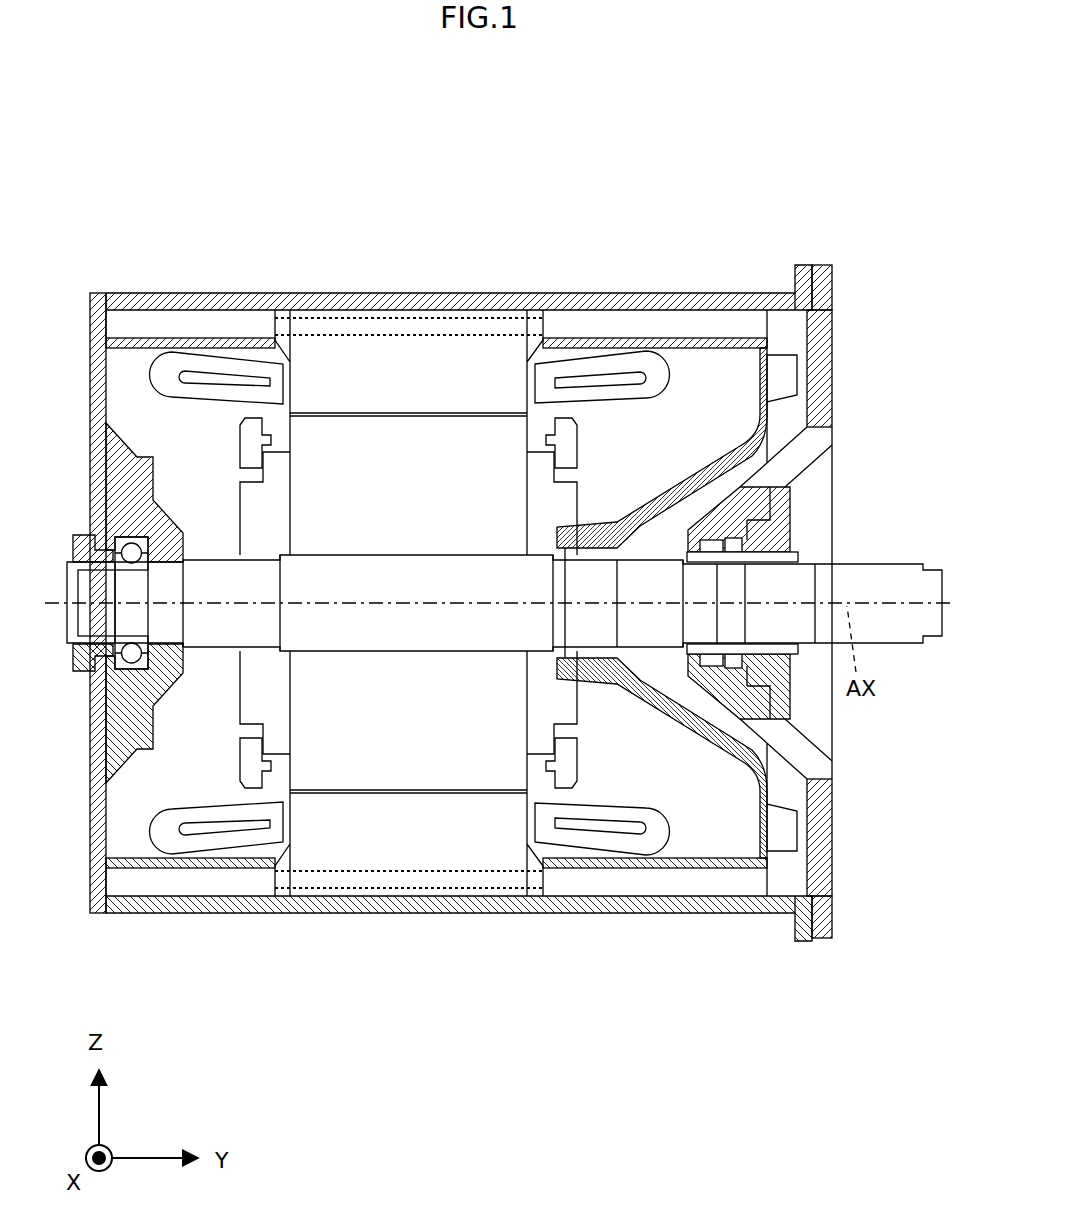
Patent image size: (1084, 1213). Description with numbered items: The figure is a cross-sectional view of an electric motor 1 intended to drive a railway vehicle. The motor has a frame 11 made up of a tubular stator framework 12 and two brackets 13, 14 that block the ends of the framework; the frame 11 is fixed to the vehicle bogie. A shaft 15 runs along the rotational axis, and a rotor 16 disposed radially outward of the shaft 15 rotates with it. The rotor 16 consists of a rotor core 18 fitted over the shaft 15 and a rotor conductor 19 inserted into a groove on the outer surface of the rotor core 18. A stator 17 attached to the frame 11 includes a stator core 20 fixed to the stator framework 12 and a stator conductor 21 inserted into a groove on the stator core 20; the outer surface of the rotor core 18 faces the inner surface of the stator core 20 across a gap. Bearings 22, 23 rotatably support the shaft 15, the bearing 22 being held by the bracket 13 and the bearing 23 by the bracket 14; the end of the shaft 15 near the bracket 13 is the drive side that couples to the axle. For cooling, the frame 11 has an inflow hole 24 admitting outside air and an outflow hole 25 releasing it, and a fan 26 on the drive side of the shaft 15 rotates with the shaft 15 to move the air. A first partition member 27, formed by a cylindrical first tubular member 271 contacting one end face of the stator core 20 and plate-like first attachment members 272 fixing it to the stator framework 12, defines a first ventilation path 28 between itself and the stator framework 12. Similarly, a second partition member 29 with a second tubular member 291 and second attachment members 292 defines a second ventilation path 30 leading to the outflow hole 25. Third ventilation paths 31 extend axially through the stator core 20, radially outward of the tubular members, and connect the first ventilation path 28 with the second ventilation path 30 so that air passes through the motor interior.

The electric motor 1 is at (622, 128).
The frame 11 is at (288, 272).
The stator framework 12 is at (389, 300).
The bracket 13 is at (815, 388).
The bracket 14 is at (108, 476).
The shaft 15 is at (879, 578).
The rotor 16 is at (233, 525).
The stator 17 is at (228, 408).
The rotor core 18 is at (461, 357).
The rotor conductor 19 is at (549, 440).
The stator core 20 is at (472, 468).
The stator conductor 21 is at (613, 366).
The bearing 22 is at (737, 539).
The bearing 23 is at (120, 562).
The inflow hole 24 is at (792, 456).
The outflow hole 25 is at (88, 310).
The fan 26 is at (613, 521).
The first partition member 27 is at (697, 360).
The first tubular member 271 is at (712, 348).
The first attachment member 272 is at (737, 318).
The first ventilation path 28 is at (772, 324).
The second partition member 29 is at (127, 358).
The second tubular member 291 is at (147, 349).
The second attachment member 292 is at (116, 328).
The second ventilation path 30 is at (107, 337).
The third ventilation path 31 is at (431, 318).